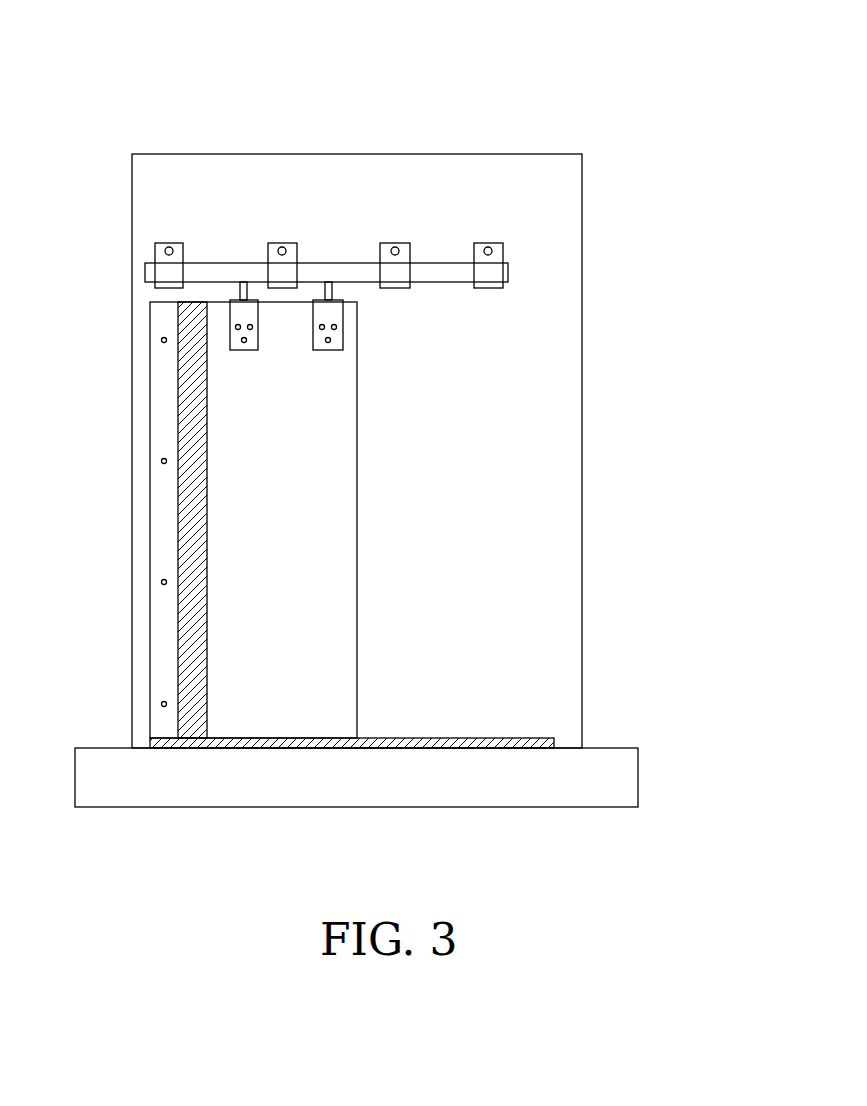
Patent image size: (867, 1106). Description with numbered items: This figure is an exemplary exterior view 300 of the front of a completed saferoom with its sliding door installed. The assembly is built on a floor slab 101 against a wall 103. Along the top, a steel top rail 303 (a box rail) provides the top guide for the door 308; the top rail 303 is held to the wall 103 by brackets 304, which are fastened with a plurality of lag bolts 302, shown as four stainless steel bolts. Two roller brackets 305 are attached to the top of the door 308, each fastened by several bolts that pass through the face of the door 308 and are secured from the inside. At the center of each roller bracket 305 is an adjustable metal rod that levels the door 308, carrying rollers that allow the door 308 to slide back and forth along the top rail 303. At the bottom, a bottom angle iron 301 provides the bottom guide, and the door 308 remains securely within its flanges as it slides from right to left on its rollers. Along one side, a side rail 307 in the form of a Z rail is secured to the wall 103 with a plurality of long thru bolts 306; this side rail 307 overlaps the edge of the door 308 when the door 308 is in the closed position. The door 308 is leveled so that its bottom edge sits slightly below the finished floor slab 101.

The exterior view 300 is at (555, 122).
The floor slab 101 is at (533, 807).
The wall 103 is at (582, 495).
The bottom angle iron 301 is at (498, 738).
The lag bolts 302 is at (488, 251).
The top rail 303 is at (225, 263).
The brackets 304 is at (412, 258).
The roller bracket 305 is at (332, 298).
The thru bolts 306 is at (161, 461).
The side rail 307 is at (162, 558).
The door 308 is at (235, 665).